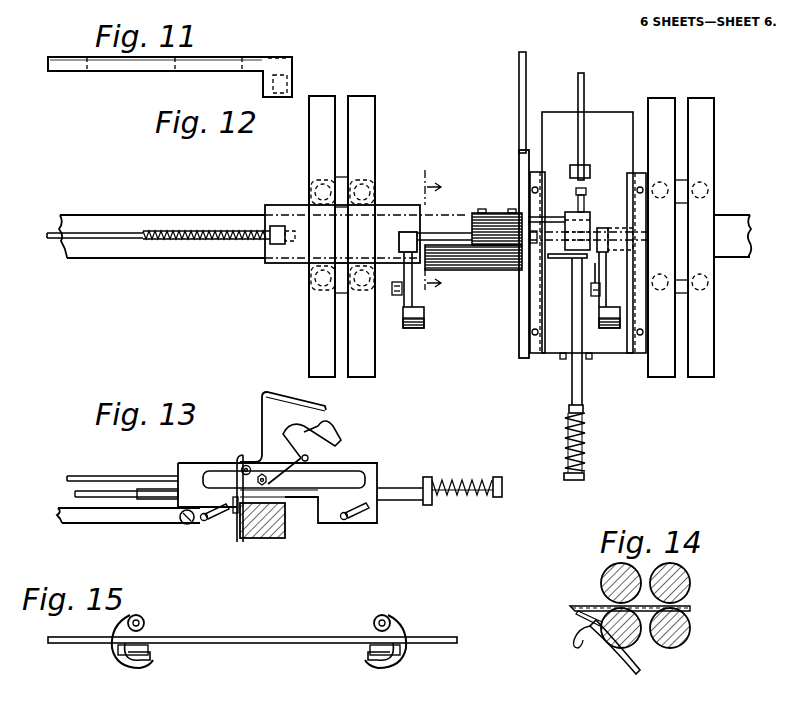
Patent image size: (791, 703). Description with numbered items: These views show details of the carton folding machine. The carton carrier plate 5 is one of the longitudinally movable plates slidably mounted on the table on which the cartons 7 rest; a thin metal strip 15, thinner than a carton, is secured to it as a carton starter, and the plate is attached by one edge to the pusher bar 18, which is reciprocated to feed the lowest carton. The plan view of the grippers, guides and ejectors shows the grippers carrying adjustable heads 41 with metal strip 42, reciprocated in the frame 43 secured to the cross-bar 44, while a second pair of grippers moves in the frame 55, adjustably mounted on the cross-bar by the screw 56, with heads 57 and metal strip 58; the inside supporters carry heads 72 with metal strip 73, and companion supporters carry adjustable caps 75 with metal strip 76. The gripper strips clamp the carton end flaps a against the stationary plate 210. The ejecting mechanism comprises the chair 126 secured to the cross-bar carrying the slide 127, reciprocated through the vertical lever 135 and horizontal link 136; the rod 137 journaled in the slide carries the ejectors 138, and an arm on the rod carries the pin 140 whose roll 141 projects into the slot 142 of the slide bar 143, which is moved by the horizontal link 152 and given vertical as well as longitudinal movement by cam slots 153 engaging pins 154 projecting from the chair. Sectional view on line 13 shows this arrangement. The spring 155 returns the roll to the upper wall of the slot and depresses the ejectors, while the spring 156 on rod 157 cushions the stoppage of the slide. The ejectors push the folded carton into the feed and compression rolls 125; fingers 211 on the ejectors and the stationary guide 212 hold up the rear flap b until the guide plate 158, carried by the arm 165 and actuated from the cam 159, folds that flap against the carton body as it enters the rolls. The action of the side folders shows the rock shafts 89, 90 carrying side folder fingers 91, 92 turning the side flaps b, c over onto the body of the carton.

In FIG. 11, the carton carrier plate 5 is at (134, 71).
In FIG. 11, the thin metal strip 15 is at (266, 57).
In FIG. 11, the pusher bar 18 is at (292, 82).
In FIG. 12, the adjustable head 41 is at (706, 193).
In FIG. 12, the metal strip 42 is at (702, 378).
In FIG. 12, the frame 43 is at (676, 296).
In FIG. 12, the cross-bar 44 is at (188, 218).
In FIG. 13, the cross-bar 44 is at (266, 540).
In FIG. 12, the frame 55 is at (283, 265).
In FIG. 12, the screw 56 is at (136, 232).
In FIG. 12, the adjustable head 57 is at (314, 192).
In FIG. 12, the metal strip 58 is at (309, 148).
In FIG. 12, the adjustable head 72 is at (700, 182).
In FIG. 12, the metal strip 73 is at (665, 378).
In FIG. 12, the adjustable cap 75 is at (368, 188).
In FIG. 12, the metal strip 76 is at (375, 146).
In FIG. 12, the thin metal strip 13 is at (431, 232).
In FIG. 14, the feed and compression rolls 125 is at (634, 605).
In FIG. 12, the chair 126 is at (546, 354).
In FIG. 13, the chair 126 is at (311, 505).
In FIG. 12, the slide 127 is at (607, 122).
In FIG. 13, the slide 127 is at (134, 491).
In FIG. 13, the vertical lever 135 is at (120, 476).
In FIG. 12, the horizontal link 136 is at (585, 85).
In FIG. 12, the rod 137 is at (486, 230).
In FIG. 13, the rod 137 is at (290, 490).
In FIG. 12, the ejector 138 is at (424, 318).
In FIG. 13, the ejector 138 is at (333, 438).
In FIG. 12, the pin 140 is at (560, 258).
In FIG. 13, the pin 140 is at (248, 464).
In FIG. 13, the roll 141 is at (240, 474).
In FIG. 13, the slot 142 is at (353, 472).
In FIG. 12, the slide bar 143 is at (519, 352).
In FIG. 13, the slide bar 143 is at (380, 520).
In FIG. 12, the horizontal link 152 is at (527, 78).
In FIG. 13, the horizontal link 152 is at (146, 525).
In FIG. 13, the cam slot 153 is at (233, 512).
In FIG. 12, the pin 154 is at (530, 189).
In FIG. 13, the pin 154 is at (201, 521).
In FIG. 12, the spring 155 is at (578, 196).
In FIG. 12, the spring 156 is at (586, 442).
In FIG. 13, the spring 156 is at (462, 486).
In FIG. 12, the rod 157 is at (583, 400).
In FIG. 13, the rod 157 is at (408, 486).
In FIG. 13, the guide plate 158 is at (184, 523).
In FIG. 14, the guide plate 158 is at (576, 650).
In FIG. 12, the cam 159 is at (589, 212).
In FIG. 14, the arm 165 is at (630, 668).
In FIG. 15, the stationary plate 210 is at (248, 637).
In FIG. 12, the finger 211 is at (397, 300).
In FIG. 13, the finger 211 is at (325, 408).
In FIG. 12, the stationary guide 212 is at (505, 266).
In FIG. 13, the stationary guide 212 is at (262, 392).
In FIG. 14, the carton 7 is at (590, 606).
In FIG. 15, the rock shaft 89 is at (382, 615).
In FIG. 15, the rock shaft 90 is at (145, 623).
In FIG. 15, the side folder finger 91 is at (398, 628).
In FIG. 15, the side folder finger 92 is at (118, 630).
In FIG. 15, the end flap a is at (268, 645).
In FIG. 14, the side flap b is at (580, 614).
In FIG. 15, the side flap b is at (160, 652).
In FIG. 14, the side flap c is at (690, 611).
In FIG. 15, the side flap c is at (350, 652).